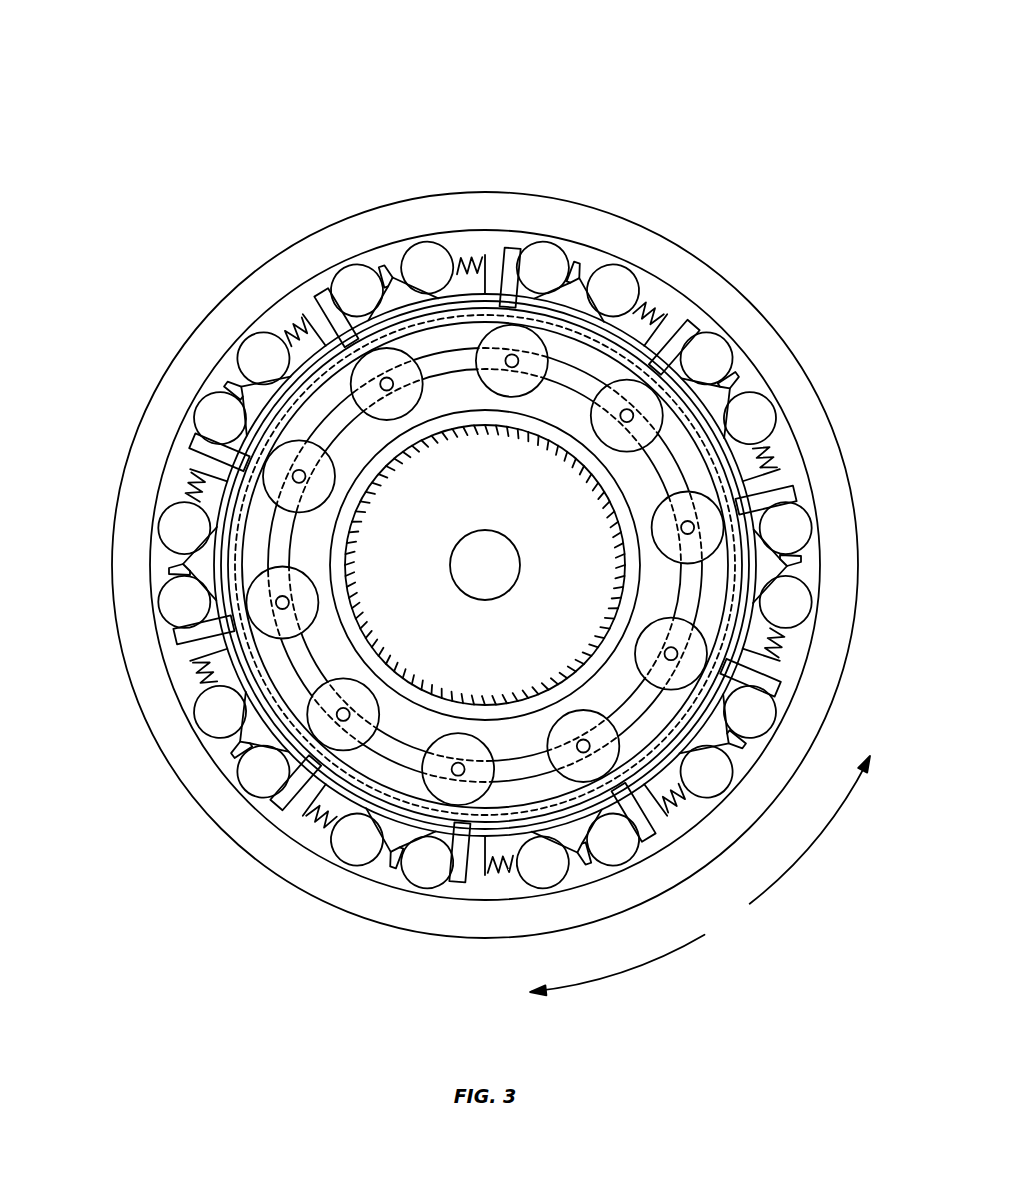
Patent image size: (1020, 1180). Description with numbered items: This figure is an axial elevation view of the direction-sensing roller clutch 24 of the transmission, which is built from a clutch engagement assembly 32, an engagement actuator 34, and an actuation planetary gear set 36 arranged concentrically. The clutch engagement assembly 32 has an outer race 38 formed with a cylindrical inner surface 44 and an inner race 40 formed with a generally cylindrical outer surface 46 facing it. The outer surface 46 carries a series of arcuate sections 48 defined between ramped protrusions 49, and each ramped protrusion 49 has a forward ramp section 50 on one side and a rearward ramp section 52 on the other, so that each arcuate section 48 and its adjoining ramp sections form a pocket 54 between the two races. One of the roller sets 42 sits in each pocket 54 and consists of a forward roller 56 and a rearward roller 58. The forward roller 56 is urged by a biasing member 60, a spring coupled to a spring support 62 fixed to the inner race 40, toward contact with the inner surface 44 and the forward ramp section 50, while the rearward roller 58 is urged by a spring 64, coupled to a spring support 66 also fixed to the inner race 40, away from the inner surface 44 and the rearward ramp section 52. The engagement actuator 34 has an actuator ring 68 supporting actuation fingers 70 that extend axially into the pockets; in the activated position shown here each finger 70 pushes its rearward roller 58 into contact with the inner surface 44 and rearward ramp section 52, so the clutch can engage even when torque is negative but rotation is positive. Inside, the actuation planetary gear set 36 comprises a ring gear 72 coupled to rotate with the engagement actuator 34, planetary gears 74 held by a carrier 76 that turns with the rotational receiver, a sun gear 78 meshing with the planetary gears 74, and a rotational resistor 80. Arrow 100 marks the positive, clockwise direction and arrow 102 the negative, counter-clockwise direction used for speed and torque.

The direction-sensing roller clutch 24 is at (200, 65).
The clutch engagement assembly 32 is at (515, 67).
The engagement actuator 34 is at (297, 176).
The actuation planetary gear set 36 is at (50, 750).
The outer race 38 is at (646, 218).
The inner race 40 is at (748, 418).
The roller sets 42 is at (636, 124).
The cylindrical inner surface 44 is at (646, 282).
The outer surface 46 is at (752, 241).
The arcuate sections 48 is at (652, 326).
The ramped protrusions 49 is at (658, 288).
The forward ramp section 50 is at (636, 302).
The rearward ramp section 52 is at (710, 387).
The pocket 54 is at (664, 290).
The forward roller 56 is at (458, 263).
The rearward roller 58 is at (528, 267).
The biasing member 60 is at (463, 267).
The spring support 62 is at (487, 267).
The spring 64 is at (590, 267).
The spring support 66 is at (593, 267).
The actuator ring 68 is at (347, 337).
The actuation fingers 70 is at (333, 347).
The ring gear 72 is at (396, 778).
The planetary gears 74 is at (401, 818).
The carrier 76 is at (325, 750).
The sun gear 78 is at (355, 652).
The rotational resistor 80 is at (372, 638).
The arrow 100 is at (639, 967).
The arrow 102 is at (803, 853).